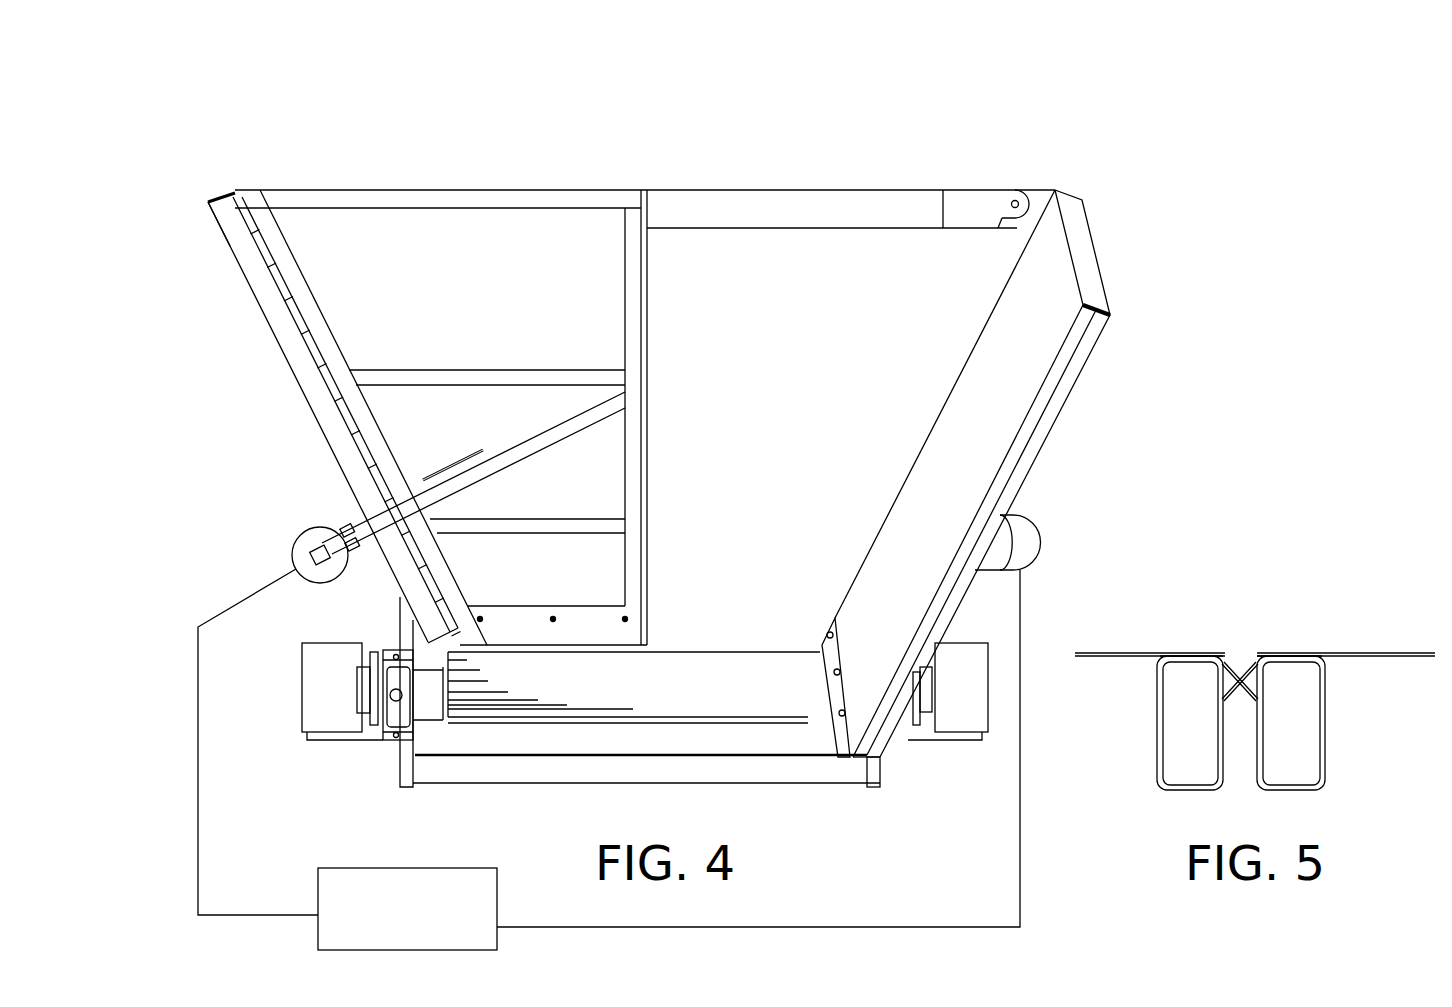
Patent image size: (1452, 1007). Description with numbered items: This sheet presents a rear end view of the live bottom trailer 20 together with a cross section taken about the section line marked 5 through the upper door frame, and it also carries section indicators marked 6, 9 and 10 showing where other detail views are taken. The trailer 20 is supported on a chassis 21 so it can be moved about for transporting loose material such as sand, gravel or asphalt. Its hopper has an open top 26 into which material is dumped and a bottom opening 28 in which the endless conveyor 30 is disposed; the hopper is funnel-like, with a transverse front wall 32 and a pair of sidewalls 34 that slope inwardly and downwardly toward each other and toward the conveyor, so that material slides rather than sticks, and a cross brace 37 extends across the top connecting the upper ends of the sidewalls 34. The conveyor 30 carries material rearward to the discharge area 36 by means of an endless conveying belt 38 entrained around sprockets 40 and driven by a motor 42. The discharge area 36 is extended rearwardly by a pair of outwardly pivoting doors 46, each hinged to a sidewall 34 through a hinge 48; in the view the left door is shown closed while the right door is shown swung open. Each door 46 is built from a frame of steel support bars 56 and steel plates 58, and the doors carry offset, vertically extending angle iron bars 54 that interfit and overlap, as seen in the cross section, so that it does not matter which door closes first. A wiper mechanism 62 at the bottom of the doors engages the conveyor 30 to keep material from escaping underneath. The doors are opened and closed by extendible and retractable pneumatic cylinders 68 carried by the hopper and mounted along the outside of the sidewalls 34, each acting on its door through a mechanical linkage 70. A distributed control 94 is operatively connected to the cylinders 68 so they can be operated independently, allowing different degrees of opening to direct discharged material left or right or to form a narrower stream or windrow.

In FIG. 4, the live bottom trailer 20 is at (1137, 163).
In FIG. 4, the chassis 21 is at (880, 785).
In FIG. 4, the open top 26 is at (778, 188).
In FIG. 4, the bottom opening 28 is at (433, 663).
In FIG. 4, the endless conveyor 30 is at (513, 730).
In FIG. 4, the front wall 32 is at (790, 385).
In FIG. 4, the sidewalls 34 is at (213, 205).
In FIG. 4, the discharge area 36 is at (770, 799).
In FIG. 4, the cross brace 37 is at (990, 205).
In FIG. 4, the endless conveying belt 38 is at (610, 687).
In FIG. 4, the sprockets 40 is at (447, 717).
In FIG. 4, the motor 42 is at (305, 660).
In FIG. 4, the doors 46 is at (537, 188).
In FIG. 5, the doors 46 is at (1183, 648).
In FIG. 4, the hinge 48 is at (228, 188).
In FIG. 4, the angle iron bars 54 is at (1050, 400).
In FIG. 5, the angle iron bars 54 is at (1237, 676).
In FIG. 4, the steel support bars 56 is at (368, 200).
In FIG. 5, the steel support bars 56 is at (1163, 727).
In FIG. 4, the steel plates 58 is at (580, 417).
In FIG. 5, the steel plates 58 is at (1150, 652).
In FIG. 4, the wiper mechanism 62 is at (830, 718).
In FIG. 4, the pneumatic cylinders 68 is at (1027, 533).
In FIG. 4, the mechanical linkage 70 is at (364, 558).
In FIG. 4, the distributed control 94 is at (340, 866).
In FIG. 4, the section view indicator 5 is at (593, 250).
In FIG. 4, the section view indicator 6 is at (480, 390).
In FIG. 4, the section view indicator 9 is at (599, 670).
In FIG. 4, the section view indicator 10 is at (318, 220).